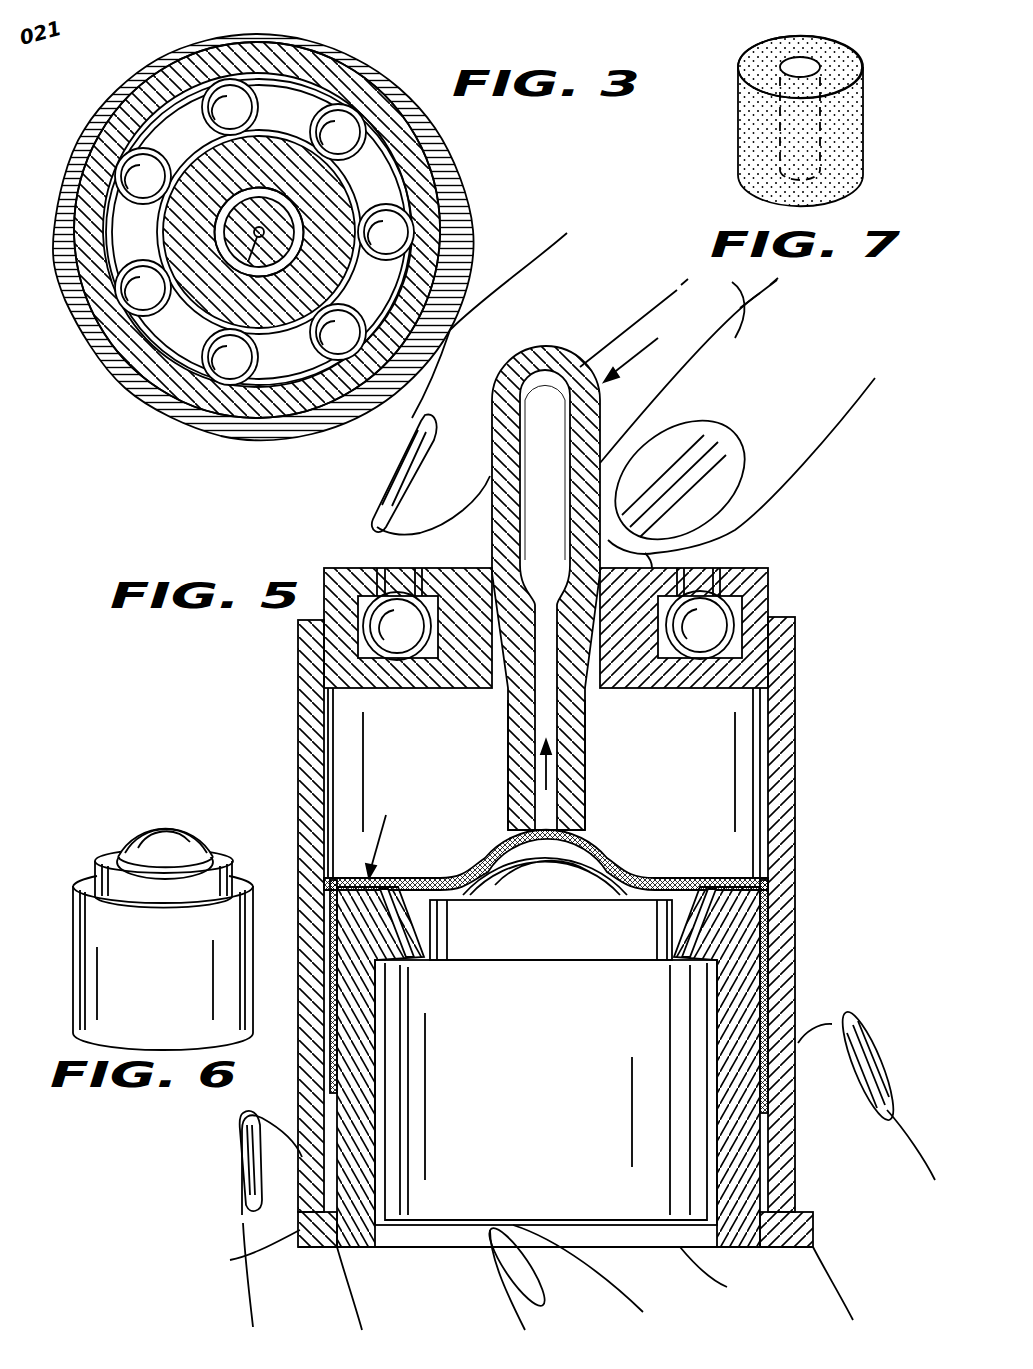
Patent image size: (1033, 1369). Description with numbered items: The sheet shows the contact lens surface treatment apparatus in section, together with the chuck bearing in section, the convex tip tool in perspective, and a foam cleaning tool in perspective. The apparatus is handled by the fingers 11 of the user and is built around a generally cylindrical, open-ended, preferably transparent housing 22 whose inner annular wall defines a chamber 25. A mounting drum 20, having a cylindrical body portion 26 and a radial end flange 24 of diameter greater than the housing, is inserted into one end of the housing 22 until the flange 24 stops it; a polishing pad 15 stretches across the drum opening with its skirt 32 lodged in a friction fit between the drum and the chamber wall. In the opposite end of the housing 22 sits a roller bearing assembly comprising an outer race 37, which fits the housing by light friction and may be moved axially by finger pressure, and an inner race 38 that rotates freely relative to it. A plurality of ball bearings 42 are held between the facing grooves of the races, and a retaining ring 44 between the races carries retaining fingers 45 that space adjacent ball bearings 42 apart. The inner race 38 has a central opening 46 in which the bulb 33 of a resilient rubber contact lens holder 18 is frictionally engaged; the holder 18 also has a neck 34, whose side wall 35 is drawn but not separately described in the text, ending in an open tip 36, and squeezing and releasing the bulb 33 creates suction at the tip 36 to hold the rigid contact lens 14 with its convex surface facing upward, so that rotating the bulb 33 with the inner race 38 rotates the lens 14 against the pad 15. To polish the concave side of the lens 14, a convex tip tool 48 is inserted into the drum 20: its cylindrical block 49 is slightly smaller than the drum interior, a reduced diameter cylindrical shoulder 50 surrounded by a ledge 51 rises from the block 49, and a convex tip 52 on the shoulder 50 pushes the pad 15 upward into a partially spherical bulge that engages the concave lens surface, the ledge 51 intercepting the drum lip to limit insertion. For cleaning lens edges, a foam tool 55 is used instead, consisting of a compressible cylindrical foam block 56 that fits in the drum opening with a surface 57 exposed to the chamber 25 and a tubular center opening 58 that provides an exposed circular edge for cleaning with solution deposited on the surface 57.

In FIG. 5, the fingers 11 is at (746, 304).
In FIG. 5, the rigid contact lens 14 is at (597, 842).
In FIG. 5, the polishing pad 15 is at (528, 594).
In FIG. 3, the contact lens holder 18 is at (245, 271).
In FIG. 5, the mounting drum 20 is at (390, 1083).
In FIG. 3, the cylindrical housing 22 is at (450, 138).
In FIG. 5, the cylindrical housing 22 is at (785, 750).
In FIG. 5, the radial end flange 24 is at (298, 1240).
In FIG. 5, the chamber 25 is at (712, 818).
In FIG. 5, the cylindrical body portion 26 is at (377, 1165).
In FIG. 5, the skirt 32 is at (780, 952).
In FIG. 5, the bulb 33 is at (492, 517).
In FIG. 5, the neck 34 is at (587, 750).
In FIG. 5, the tube wall 35 is at (537, 705).
In FIG. 5, the open tip 36 is at (547, 815).
In FIG. 3, the outer race 37 is at (153, 72).
In FIG. 5, the outer race 37 is at (770, 592).
In FIG. 3, the inner race 38 is at (198, 291).
In FIG. 5, the inner race 38 is at (632, 572).
In FIG. 3, the ball bearings 42 is at (338, 122).
In FIG. 5, the ball bearings 42 is at (398, 662).
In FIG. 5, the retaining ring 44 is at (395, 568).
In FIG. 3, the retaining fingers 45 is at (110, 259).
In FIG. 3, the central opening 46 is at (259, 237).
In FIG. 6, the convex tip tool 48 is at (246, 864).
In FIG. 5, the convex tip tool 48 is at (676, 1061).
In FIG. 6, the cylindrical block 49 is at (238, 982).
In FIG. 6, the cylindrical shoulder 50 is at (108, 855).
In FIG. 5, the cylindrical shoulder 50 is at (627, 948).
In FIG. 6, the ledge 51 is at (92, 880).
In FIG. 6, the convex tip 52 is at (168, 830).
In FIG. 5, the convex tip 52 is at (563, 872).
In FIG. 7, the foam tool 55 is at (735, 77).
In FIG. 7, the cylindrical foam block 56 is at (836, 164).
In FIG. 7, the surface 57 is at (812, 86).
In FIG. 7, the tubular center opening 58 is at (786, 64).